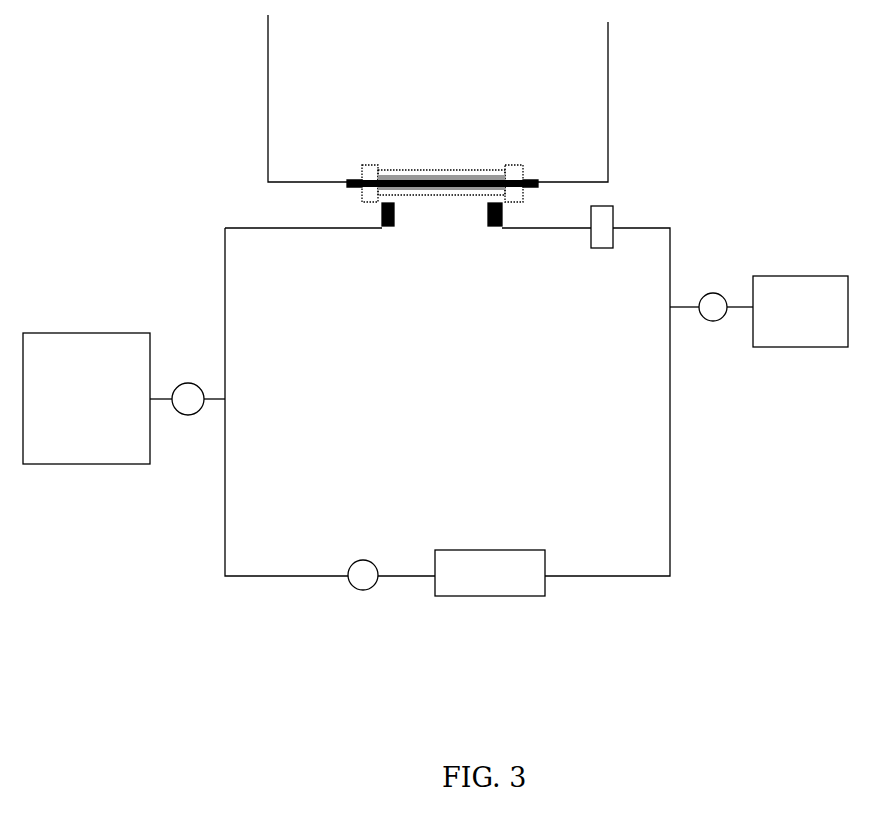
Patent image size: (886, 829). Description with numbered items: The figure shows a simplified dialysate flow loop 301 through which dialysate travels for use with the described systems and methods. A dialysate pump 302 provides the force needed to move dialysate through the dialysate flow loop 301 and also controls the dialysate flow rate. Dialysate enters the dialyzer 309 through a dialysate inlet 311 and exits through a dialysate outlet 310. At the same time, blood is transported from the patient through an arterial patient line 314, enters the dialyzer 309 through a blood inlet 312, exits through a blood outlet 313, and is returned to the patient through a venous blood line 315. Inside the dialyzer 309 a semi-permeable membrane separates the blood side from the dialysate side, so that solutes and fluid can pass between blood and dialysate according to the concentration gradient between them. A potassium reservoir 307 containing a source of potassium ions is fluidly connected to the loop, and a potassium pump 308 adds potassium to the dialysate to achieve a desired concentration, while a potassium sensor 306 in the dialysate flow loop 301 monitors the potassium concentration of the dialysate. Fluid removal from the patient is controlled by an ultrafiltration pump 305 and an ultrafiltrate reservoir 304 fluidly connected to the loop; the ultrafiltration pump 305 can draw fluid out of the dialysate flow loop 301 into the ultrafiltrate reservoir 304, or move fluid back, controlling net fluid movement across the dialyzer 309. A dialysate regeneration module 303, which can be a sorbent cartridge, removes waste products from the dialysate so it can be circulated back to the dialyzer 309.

The dialysate flow loop 301 is at (278, 577).
The dialysate pump 302 is at (360, 560).
The dialysate regeneration module 303 is at (485, 550).
The ultrafiltrate reservoir 304 is at (97, 398).
The ultrafiltration pump 305 is at (188, 415).
The potassium sensor 306 is at (603, 248).
The potassium reservoir 307 is at (787, 311).
The potassium pump 308 is at (717, 318).
The dialyzer 309 is at (443, 175).
The dialysate outlet 310 is at (388, 226).
The dialysate inlet 311 is at (493, 228).
The blood inlet 312 is at (360, 182).
The blood outlet 313 is at (537, 183).
The arterial patient line 314 is at (272, 62).
The venous blood line 315 is at (608, 60).